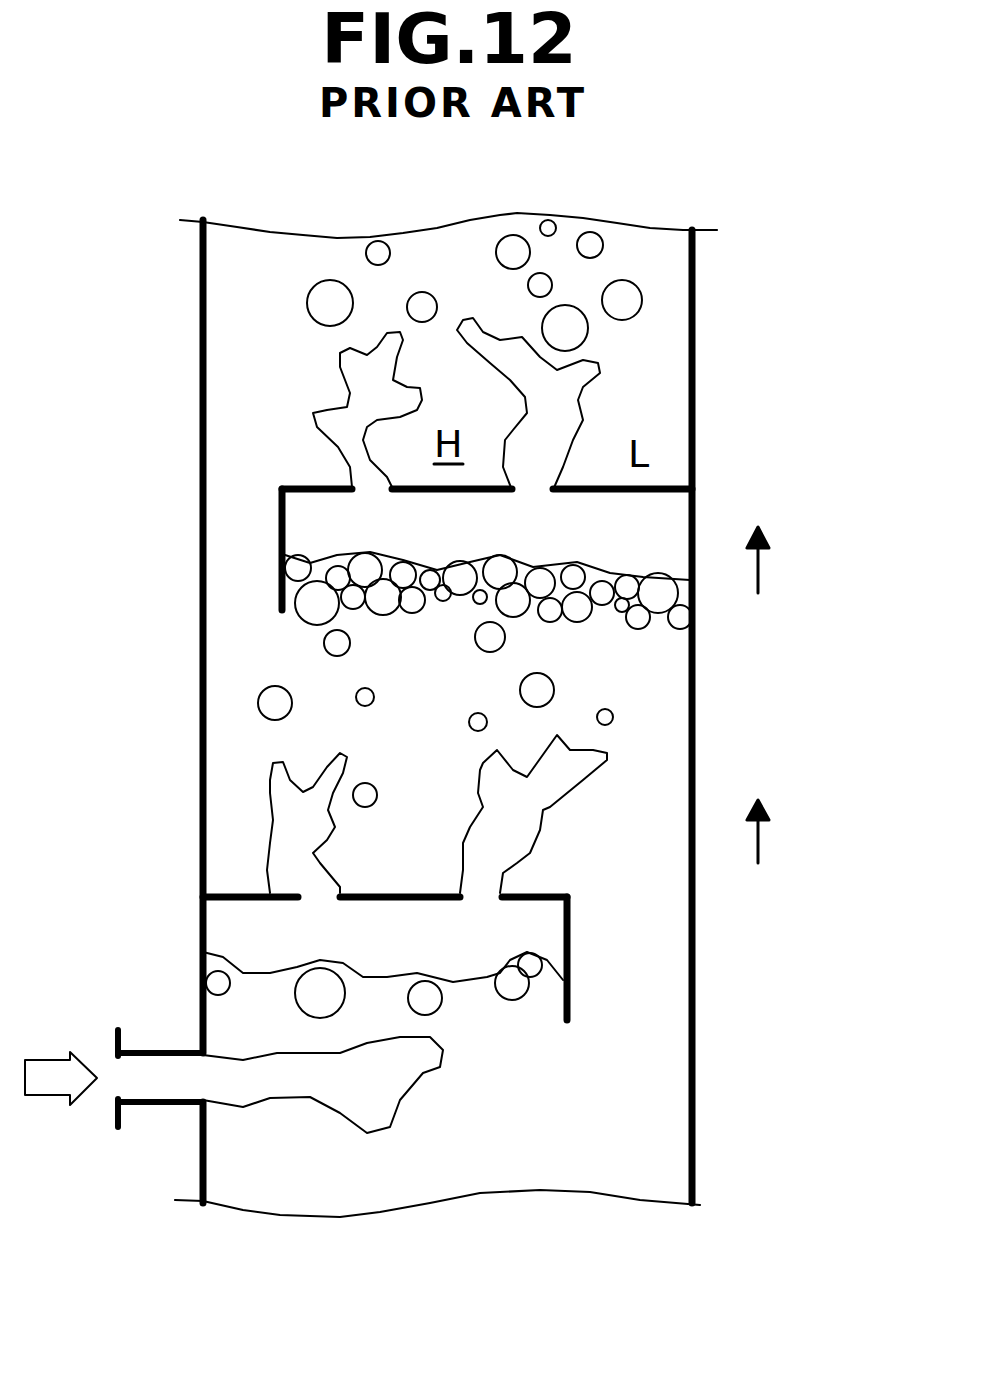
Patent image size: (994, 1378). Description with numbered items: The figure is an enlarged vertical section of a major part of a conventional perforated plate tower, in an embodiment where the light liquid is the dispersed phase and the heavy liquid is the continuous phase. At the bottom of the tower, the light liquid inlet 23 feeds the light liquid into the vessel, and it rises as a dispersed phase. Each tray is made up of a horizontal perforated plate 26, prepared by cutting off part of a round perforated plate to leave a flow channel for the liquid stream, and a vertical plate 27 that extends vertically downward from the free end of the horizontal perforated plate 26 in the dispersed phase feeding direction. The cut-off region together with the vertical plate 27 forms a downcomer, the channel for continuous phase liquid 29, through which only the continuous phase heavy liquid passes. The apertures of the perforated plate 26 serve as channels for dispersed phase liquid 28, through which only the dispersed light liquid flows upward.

The light liquid inlet 23 is at (114, 1134).
The horizontal perforated plate 26 is at (505, 715).
The vertical plate 27 is at (171, 556).
The channel for dispersed phase liquid 28 is at (448, 730).
The channel for continuous phase liquid 29 is at (448, 853).